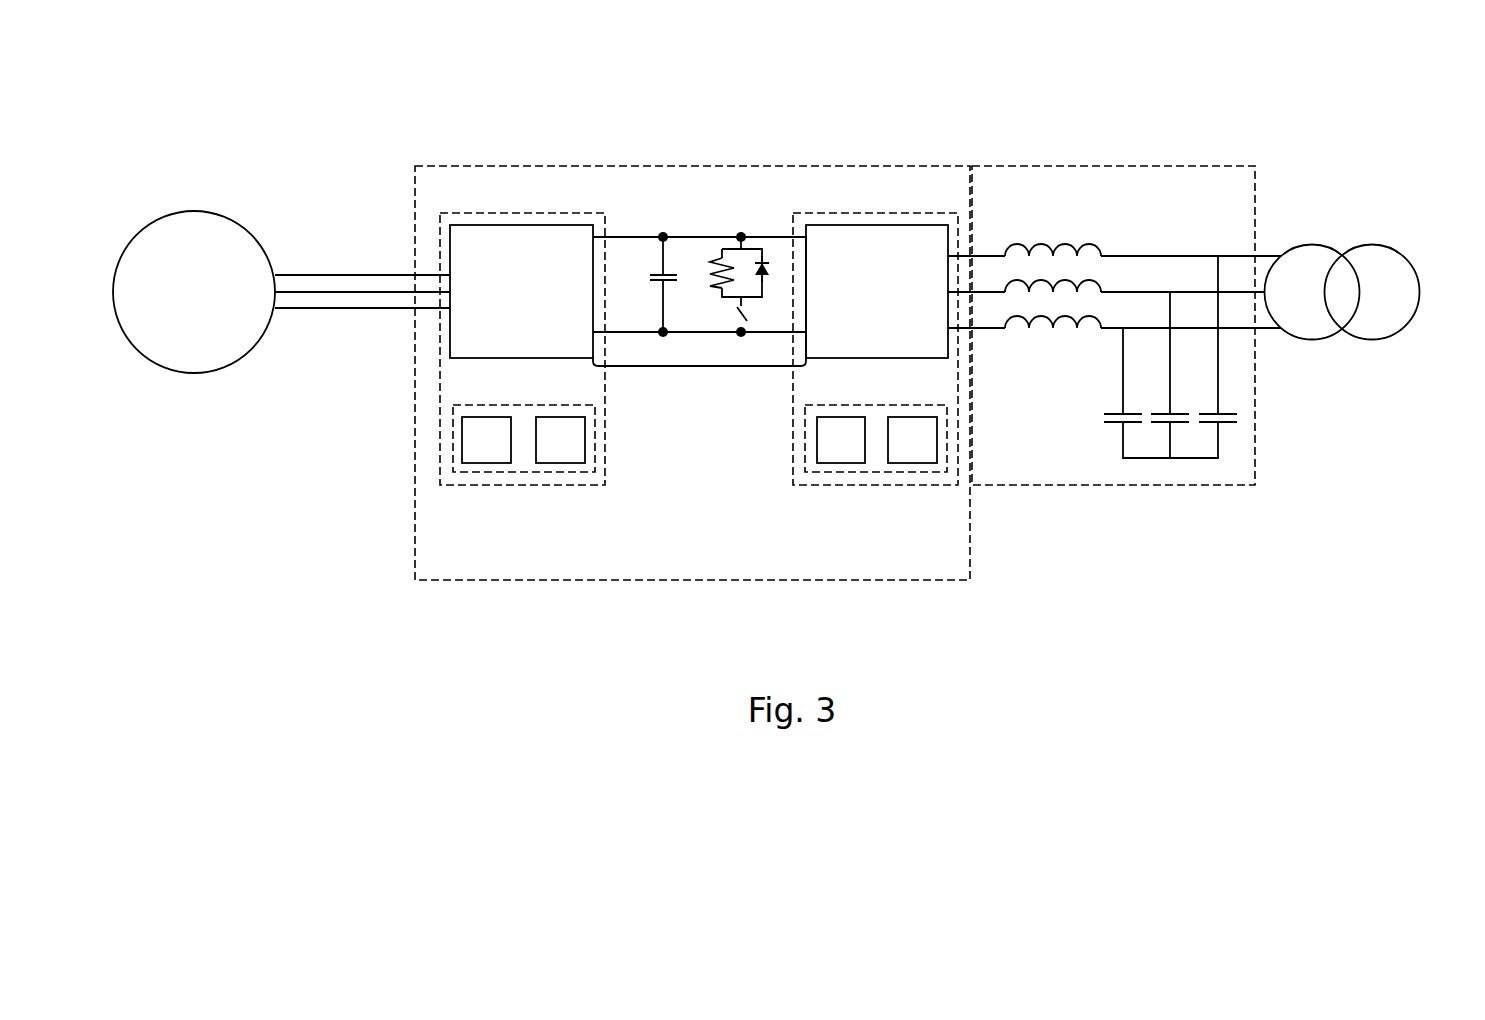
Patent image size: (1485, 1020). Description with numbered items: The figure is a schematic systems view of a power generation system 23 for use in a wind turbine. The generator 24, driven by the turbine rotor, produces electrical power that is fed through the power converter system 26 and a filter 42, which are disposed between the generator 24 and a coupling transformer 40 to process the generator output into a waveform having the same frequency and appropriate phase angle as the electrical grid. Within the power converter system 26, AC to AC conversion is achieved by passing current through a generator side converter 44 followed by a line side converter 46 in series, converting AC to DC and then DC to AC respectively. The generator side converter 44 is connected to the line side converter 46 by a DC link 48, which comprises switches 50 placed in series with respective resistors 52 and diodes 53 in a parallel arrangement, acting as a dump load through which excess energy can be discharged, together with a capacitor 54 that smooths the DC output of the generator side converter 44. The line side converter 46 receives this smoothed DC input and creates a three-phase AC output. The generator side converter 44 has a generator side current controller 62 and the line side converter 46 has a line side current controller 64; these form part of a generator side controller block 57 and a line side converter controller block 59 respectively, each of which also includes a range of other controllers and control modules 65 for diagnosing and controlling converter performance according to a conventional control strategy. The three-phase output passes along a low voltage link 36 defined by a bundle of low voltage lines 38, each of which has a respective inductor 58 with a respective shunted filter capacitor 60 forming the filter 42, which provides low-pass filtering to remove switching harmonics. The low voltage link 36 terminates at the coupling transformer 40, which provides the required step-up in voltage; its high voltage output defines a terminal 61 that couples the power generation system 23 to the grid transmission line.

The power generation system 23 is at (1137, 113).
The generator 24 is at (281, 292).
The power converter system 26 is at (440, 167).
The low voltage link 36 is at (1268, 343).
The low voltage lines 38 is at (1265, 250).
The coupling transformer 40 is at (1313, 243).
The filter 42 is at (1188, 486).
The generator side converter 44 is at (521, 291).
The line side converter 46 is at (877, 291).
The DC link 48 is at (698, 366).
The switches 50 is at (745, 322).
The resistors 52 is at (708, 255).
The diodes 53 is at (765, 257).
The capacitor 54 is at (652, 268).
The generator side controller block 57 is at (530, 473).
The inductor 58 is at (1037, 342).
The line side converter controller block 59 is at (905, 473).
The shunted filter capacitor 60 is at (1117, 427).
The terminal 61 is at (1413, 305).
The generator side current controller 62 is at (486, 440).
The line side current controller 64 is at (841, 440).
The control modules 65 is at (736, 440).